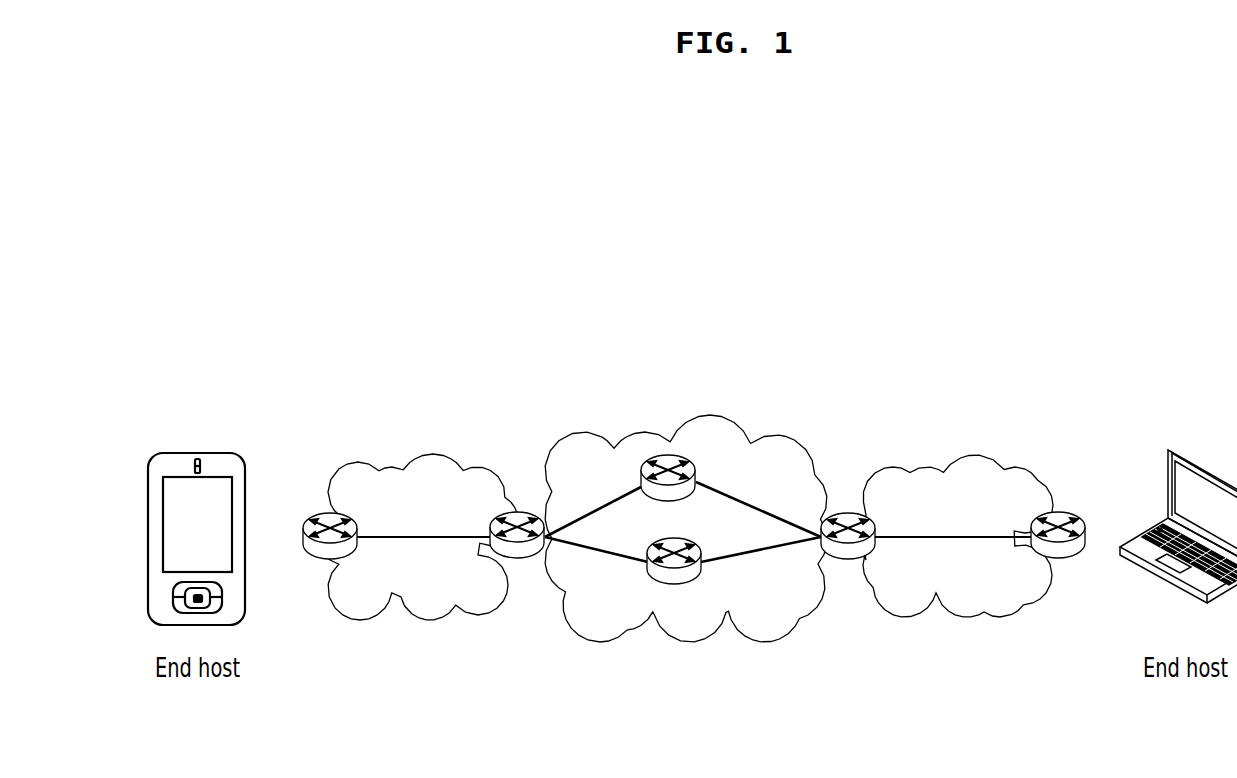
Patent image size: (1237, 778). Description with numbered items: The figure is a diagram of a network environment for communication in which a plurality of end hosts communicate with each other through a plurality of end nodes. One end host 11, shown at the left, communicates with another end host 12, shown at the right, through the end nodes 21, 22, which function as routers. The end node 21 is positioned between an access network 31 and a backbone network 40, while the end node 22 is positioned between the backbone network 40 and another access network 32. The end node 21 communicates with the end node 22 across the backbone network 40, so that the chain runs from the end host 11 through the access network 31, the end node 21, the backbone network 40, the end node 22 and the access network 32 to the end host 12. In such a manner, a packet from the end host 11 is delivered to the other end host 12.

The end host 11 is at (305, 507).
The end host 12 is at (1071, 503).
The end node 21 is at (527, 505).
The end node 22 is at (848, 504).
The access network 31 is at (433, 453).
The access network 32 is at (975, 452).
The backbone network 40 is at (710, 413).